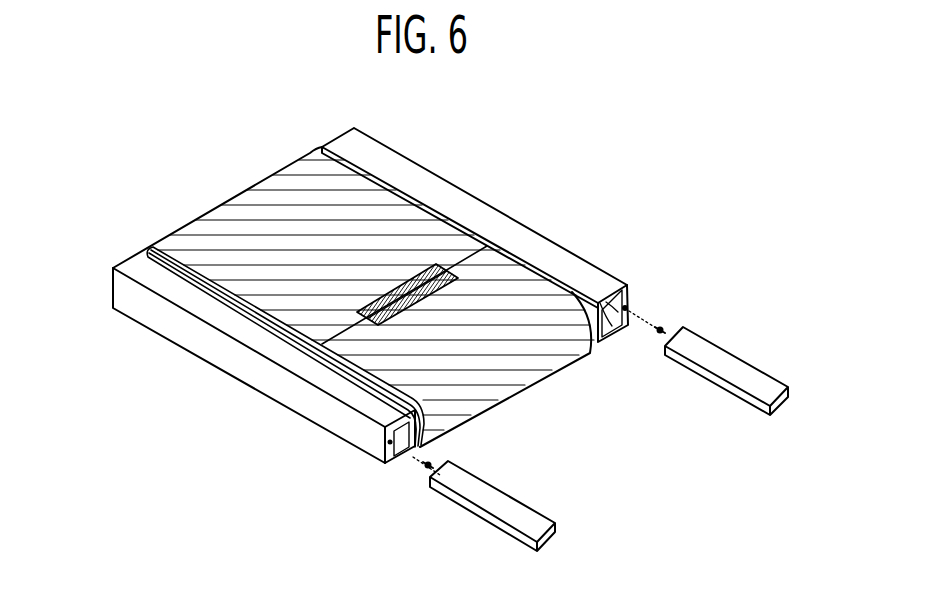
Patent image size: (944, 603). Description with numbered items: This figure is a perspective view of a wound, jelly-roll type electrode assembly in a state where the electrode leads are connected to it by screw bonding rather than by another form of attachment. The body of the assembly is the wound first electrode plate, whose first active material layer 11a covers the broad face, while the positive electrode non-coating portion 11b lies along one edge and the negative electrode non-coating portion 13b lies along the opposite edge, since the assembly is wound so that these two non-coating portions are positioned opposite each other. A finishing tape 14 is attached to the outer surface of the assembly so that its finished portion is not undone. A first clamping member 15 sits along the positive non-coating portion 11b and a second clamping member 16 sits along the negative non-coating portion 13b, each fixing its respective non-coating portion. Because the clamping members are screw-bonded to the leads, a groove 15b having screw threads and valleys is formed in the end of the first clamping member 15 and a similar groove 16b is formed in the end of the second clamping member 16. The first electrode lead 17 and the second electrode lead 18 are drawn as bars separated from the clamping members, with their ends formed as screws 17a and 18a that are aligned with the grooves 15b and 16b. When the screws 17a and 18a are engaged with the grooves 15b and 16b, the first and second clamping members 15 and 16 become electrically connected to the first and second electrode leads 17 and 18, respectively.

The first active material layer 11a is at (413, 227).
The first non-coating portion 11b is at (617, 282).
The second non-coating portion 13b is at (208, 285).
The finishing tape 14 is at (453, 289).
The first clamping member 15 is at (532, 243).
The groove 15b is at (630, 306).
The second clamping member 16 is at (238, 330).
The groove 16b is at (385, 461).
The first electrode lead 17 is at (777, 397).
The screw 17a is at (660, 333).
The second electrode lead 18 is at (547, 535).
The screw 18a is at (427, 472).